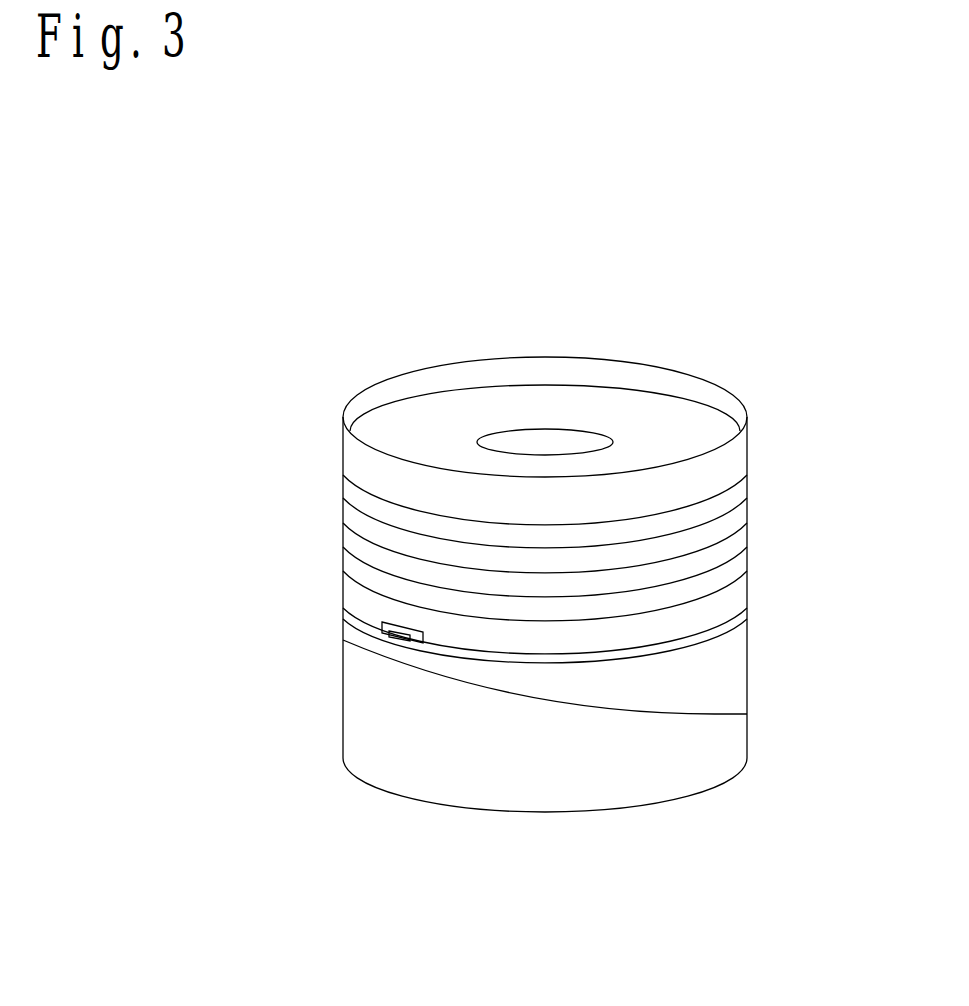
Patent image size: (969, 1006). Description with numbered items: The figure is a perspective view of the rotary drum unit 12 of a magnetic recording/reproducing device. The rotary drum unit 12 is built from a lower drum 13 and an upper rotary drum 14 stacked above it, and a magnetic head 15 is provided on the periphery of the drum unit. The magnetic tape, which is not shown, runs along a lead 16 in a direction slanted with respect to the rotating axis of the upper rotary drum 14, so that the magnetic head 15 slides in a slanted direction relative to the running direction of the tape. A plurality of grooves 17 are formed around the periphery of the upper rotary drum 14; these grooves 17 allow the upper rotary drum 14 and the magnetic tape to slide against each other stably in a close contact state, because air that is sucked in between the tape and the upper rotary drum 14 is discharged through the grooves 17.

The rotary drum unit 12 is at (647, 420).
The lower drum 13 is at (363, 689).
The upper rotary drum 14 is at (435, 379).
The magnetic head 15 is at (382, 631).
The lead 16 is at (718, 713).
The grooves 17 is at (343, 525).